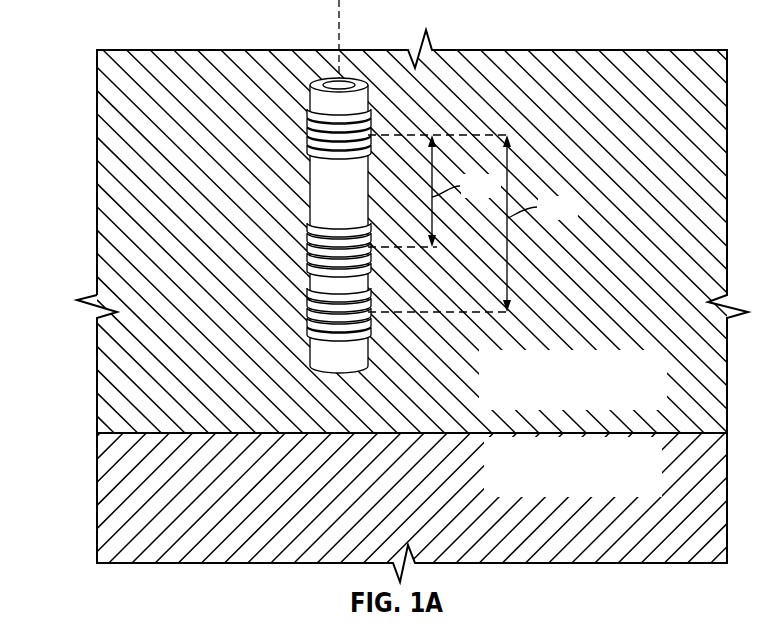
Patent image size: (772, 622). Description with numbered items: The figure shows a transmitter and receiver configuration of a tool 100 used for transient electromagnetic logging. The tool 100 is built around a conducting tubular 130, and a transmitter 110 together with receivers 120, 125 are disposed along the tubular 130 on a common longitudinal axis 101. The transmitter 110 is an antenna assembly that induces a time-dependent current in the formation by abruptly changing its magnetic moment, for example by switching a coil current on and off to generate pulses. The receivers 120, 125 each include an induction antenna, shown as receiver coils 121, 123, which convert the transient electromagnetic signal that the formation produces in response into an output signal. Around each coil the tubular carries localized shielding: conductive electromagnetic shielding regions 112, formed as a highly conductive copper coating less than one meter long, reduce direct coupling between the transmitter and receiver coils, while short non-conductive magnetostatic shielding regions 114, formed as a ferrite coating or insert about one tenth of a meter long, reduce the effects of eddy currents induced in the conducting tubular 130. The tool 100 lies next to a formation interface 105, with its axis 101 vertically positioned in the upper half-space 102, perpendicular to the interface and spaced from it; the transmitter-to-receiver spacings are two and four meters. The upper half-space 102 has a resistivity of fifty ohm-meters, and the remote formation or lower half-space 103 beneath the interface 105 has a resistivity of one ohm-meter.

The tool 100 is at (108, 28).
The longitudinal axis 101 is at (339, 30).
The upper half-space 102 is at (103, 215).
The remote formation (lower half-space) 103 is at (107, 493).
The formation interface 105 is at (163, 424).
The transmitter 110 is at (284, 137).
The conductive electromagnetic shielding region 112 is at (310, 112).
The non-conductive magnetostatic shielding region 114 is at (310, 122).
The receiver 120 is at (273, 261).
The receiver coil 121 is at (300, 248).
The receiver coil 123 is at (343, 308).
The receiver 125 is at (300, 304).
The conducting tubular 130 is at (317, 193).